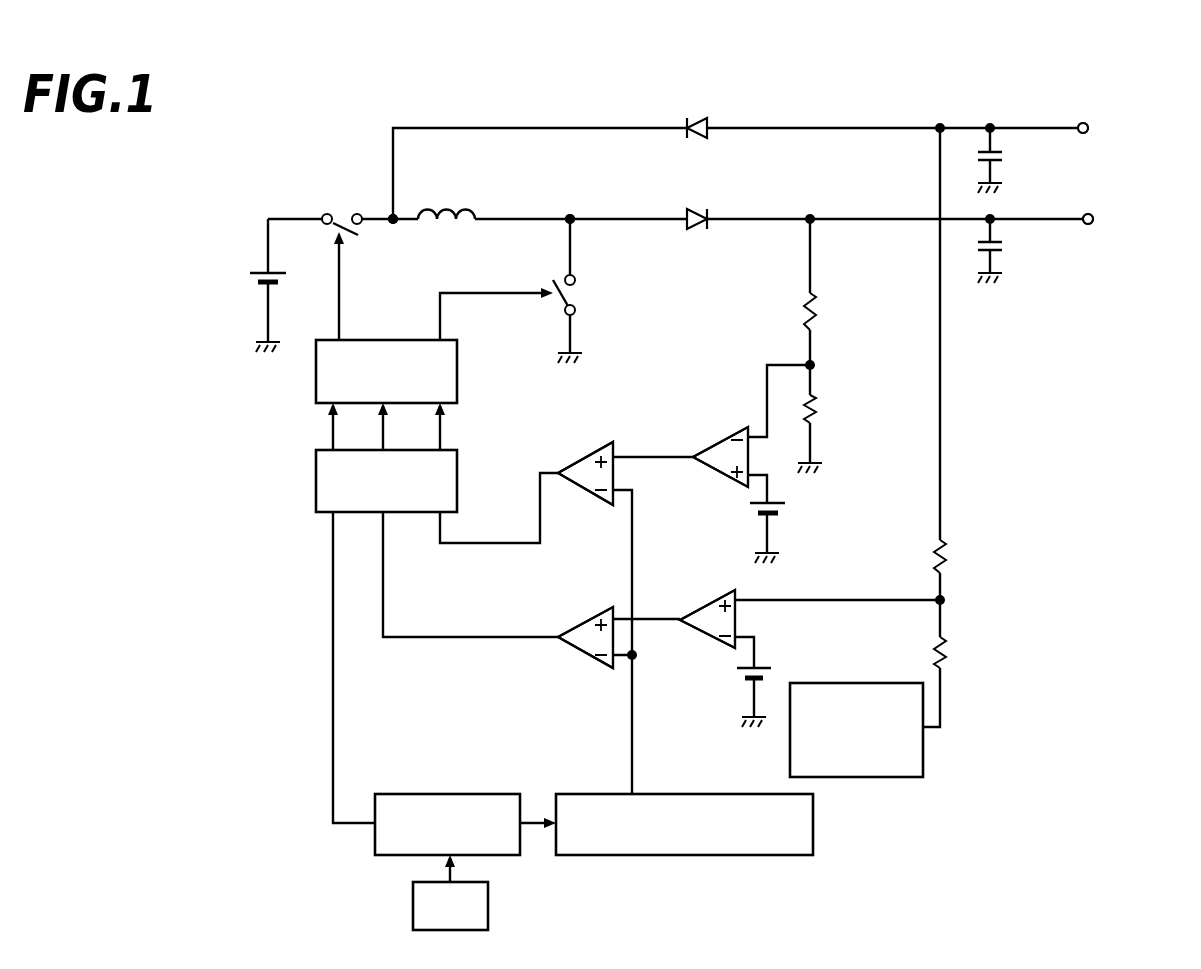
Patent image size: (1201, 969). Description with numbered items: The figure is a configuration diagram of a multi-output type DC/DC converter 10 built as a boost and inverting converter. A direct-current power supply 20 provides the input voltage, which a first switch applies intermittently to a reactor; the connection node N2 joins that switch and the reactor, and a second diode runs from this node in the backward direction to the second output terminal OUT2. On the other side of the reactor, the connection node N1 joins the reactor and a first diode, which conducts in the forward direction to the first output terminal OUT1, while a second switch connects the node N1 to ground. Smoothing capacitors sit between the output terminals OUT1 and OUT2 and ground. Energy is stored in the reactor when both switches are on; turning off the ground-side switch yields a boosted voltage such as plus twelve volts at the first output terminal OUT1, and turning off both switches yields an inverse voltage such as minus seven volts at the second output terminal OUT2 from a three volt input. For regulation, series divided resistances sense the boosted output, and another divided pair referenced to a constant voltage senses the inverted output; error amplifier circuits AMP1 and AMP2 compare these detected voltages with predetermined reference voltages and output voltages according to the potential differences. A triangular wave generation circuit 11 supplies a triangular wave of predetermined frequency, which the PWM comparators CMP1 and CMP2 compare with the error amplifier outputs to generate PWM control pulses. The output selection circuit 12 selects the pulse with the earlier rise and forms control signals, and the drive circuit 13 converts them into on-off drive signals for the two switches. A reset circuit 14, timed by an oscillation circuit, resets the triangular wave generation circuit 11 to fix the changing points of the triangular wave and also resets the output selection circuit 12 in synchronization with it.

The multi-output type DC/DC converter 10 is at (278, 148).
The triangular wave generation circuit 11 is at (813, 845).
The output selection circuit 12 is at (316, 487).
The drive circuit 13 is at (316, 383).
The reset circuit 14 is at (421, 794).
The direct-current power supply 20 is at (255, 300).
The connection node N1 is at (570, 217).
The connection node N2 is at (393, 217).
The first output terminal OUT1 is at (1087, 225).
The second output terminal OUT2 is at (1085, 124).
The PWM comparator CMP1 is at (578, 452).
The PWM comparator CMP2 is at (578, 617).
The error amplifier circuit AMP1 is at (715, 438).
The error amplifier circuit AMP2 is at (703, 600).